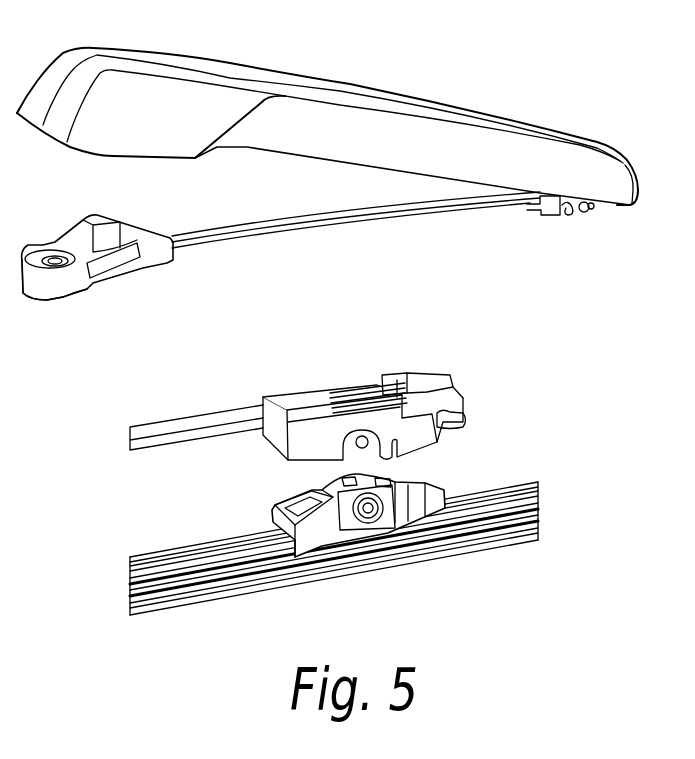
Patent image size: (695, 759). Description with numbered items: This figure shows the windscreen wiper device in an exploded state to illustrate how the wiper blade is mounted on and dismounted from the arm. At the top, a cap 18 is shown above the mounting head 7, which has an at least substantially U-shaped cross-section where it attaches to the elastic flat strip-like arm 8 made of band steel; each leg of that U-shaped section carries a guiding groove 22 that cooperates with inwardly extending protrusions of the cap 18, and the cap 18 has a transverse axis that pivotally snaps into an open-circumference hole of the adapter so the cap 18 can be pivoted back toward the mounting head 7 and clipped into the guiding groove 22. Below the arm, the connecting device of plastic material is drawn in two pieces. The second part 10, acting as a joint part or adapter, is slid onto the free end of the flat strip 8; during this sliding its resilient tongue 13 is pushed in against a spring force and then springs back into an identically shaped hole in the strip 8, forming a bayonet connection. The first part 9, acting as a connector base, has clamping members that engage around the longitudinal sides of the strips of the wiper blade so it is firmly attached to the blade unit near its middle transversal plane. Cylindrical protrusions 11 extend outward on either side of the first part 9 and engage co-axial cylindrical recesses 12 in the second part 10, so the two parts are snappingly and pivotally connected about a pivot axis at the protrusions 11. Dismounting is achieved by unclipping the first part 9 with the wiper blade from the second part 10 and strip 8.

The mounting head 7 is at (47, 283).
The flat strip-like arm 8 is at (197, 425).
The first part 9 is at (334, 526).
The second part 10 is at (557, 213).
The cylindrical protrusions 11 is at (375, 513).
The cylindrical recesses 12 is at (337, 460).
The resilient tongue 13 is at (357, 390).
The cap 18 is at (398, 118).
The guiding groove 22 is at (133, 267).